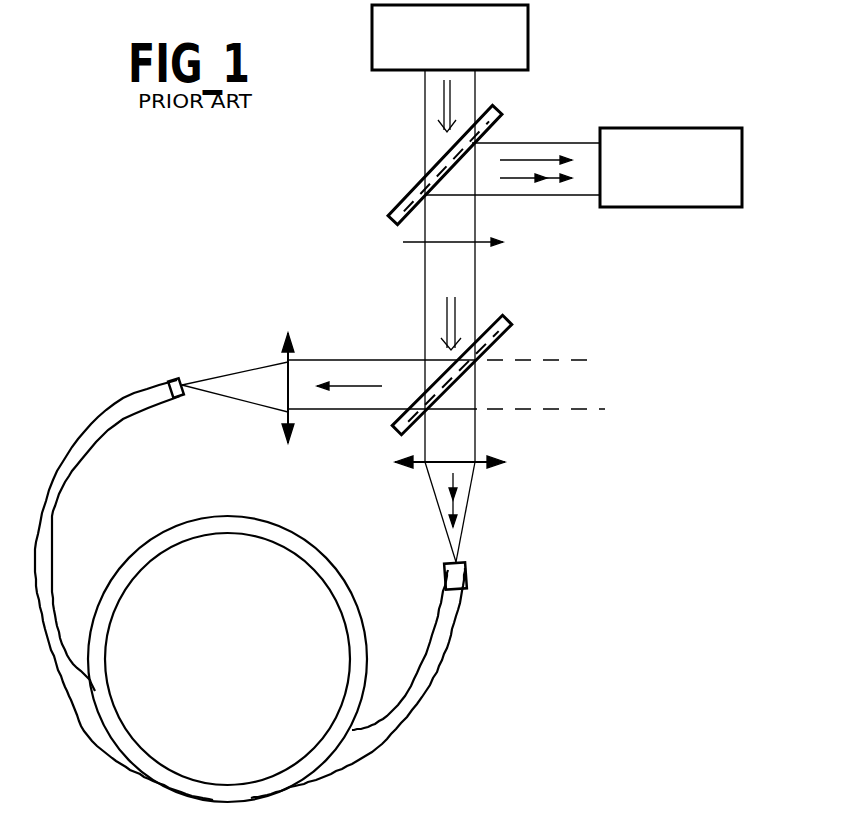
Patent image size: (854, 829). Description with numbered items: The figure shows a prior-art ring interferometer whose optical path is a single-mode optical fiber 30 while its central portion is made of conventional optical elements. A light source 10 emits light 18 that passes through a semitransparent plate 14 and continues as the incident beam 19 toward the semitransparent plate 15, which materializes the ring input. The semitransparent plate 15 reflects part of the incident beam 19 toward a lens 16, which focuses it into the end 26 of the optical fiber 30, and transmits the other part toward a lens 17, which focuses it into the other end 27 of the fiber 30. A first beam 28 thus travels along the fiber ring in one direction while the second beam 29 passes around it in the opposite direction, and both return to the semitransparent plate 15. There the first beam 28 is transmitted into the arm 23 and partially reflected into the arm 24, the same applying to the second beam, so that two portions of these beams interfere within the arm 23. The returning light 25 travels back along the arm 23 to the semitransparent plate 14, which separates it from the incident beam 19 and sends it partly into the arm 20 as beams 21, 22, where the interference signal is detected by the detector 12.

The light source 10 is at (371, 34).
The detector 12 is at (645, 127).
The semitransparent plate 14 is at (403, 192).
The semitransparent plate 15 is at (503, 322).
The lens 16 is at (284, 347).
The lens 17 is at (505, 460).
The light beam from source 18 is at (440, 92).
The incident beam 19 is at (445, 315).
The arm 20 is at (551, 142).
The reflected beam to detector 21 is at (520, 158).
The returned beam to detector 22 is at (513, 180).
The arm 23 is at (462, 262).
The arm 24 is at (565, 375).
The beam returned from fiber loop 25 is at (413, 243).
The end 26 is at (183, 377).
The end 27 is at (458, 560).
The first beam 28 is at (343, 385).
The second beam 29 is at (452, 480).
The optical fiber 30 is at (432, 652).